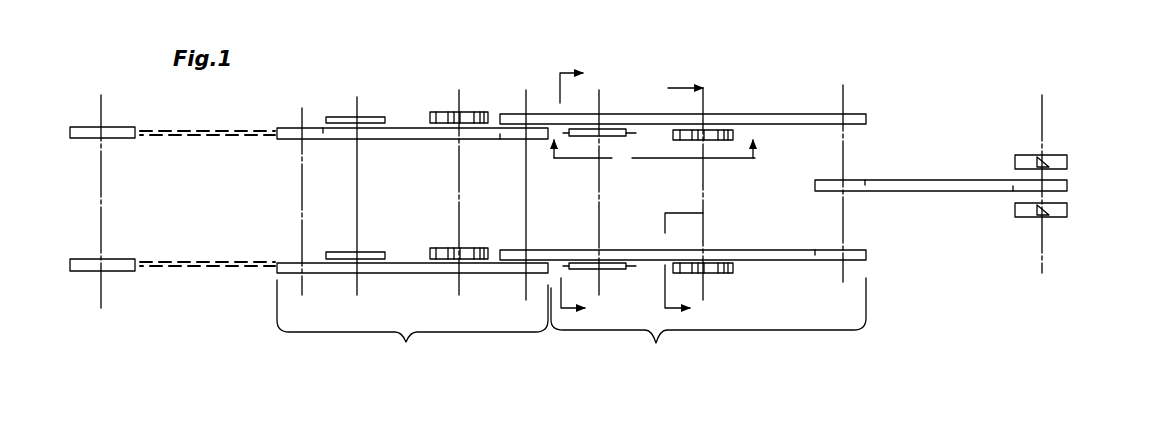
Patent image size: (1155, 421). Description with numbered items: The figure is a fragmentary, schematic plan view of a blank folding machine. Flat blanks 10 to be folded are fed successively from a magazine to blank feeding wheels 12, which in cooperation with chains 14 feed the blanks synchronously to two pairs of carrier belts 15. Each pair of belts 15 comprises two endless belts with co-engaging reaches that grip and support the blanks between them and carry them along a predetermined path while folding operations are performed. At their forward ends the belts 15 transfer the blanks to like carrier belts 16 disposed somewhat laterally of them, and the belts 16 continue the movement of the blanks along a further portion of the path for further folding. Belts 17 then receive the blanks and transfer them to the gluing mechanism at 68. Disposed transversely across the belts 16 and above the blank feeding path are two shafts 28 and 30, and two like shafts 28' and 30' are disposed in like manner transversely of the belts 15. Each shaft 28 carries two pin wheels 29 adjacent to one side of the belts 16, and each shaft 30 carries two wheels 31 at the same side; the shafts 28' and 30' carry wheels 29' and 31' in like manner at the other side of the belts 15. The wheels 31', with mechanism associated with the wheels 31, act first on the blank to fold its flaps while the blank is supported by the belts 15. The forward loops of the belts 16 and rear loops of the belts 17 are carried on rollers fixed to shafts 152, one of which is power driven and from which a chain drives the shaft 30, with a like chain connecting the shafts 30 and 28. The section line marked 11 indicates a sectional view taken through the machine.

The flat blanks 10 is at (653, 164).
The section line 11 is at (587, 192).
The blank feeding wheels 12 is at (70, 132).
The chains 14 is at (210, 137).
The carrier belts 15 is at (397, 128).
The carrier belts 16 is at (793, 119).
The belts 17 is at (945, 182).
The shaft 28 is at (620, 192).
The shaft 28' is at (332, 196).
The pin wheels 29 is at (604, 212).
The wheels 29' is at (347, 170).
The shaft 30 is at (718, 172).
The shaft 30' is at (467, 185).
The wheels 31 is at (736, 193).
The wheels 31' is at (469, 185).
The gluing mechanism 68 is at (1072, 197).
The shafts 152 is at (843, 241).